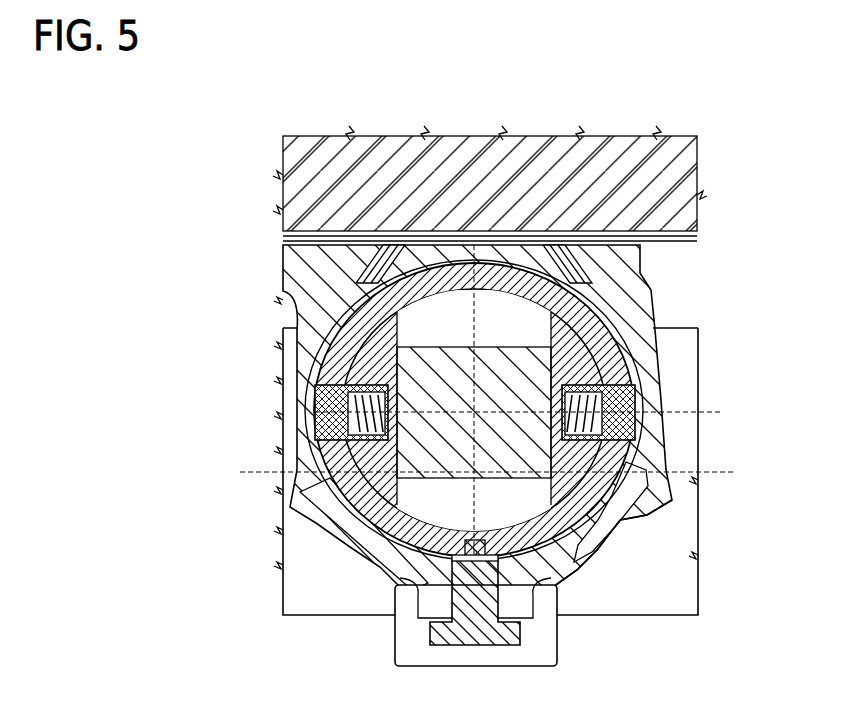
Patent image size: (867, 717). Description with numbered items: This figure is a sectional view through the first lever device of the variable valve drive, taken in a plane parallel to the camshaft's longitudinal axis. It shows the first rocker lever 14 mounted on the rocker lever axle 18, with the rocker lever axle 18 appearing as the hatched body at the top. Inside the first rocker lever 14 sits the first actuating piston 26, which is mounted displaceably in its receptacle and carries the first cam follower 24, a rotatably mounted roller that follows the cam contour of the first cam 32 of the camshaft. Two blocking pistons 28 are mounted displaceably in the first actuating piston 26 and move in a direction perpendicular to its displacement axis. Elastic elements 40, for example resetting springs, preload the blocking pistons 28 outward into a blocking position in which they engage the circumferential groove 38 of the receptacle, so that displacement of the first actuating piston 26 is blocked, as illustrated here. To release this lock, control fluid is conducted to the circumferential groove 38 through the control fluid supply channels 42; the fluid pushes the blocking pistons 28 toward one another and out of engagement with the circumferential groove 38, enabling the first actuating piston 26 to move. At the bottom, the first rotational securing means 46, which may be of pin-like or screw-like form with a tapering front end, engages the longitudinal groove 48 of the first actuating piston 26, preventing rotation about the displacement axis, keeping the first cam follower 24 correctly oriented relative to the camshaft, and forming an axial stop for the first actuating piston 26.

The rocker lever axle 18 is at (668, 172).
The first rocker lever 14 is at (655, 312).
The control fluid supply channel 42 is at (355, 268).
The circumferential groove 38 is at (283, 348).
The first cam follower 24 is at (640, 372).
The blocking piston 28 is at (314, 412).
The elastic element 40 is at (290, 505).
The first actuating piston 26 is at (635, 540).
The first cam 32 is at (548, 640).
The first rotational securing means 46 is at (483, 648).
The longitudinal groove 48 is at (400, 618).